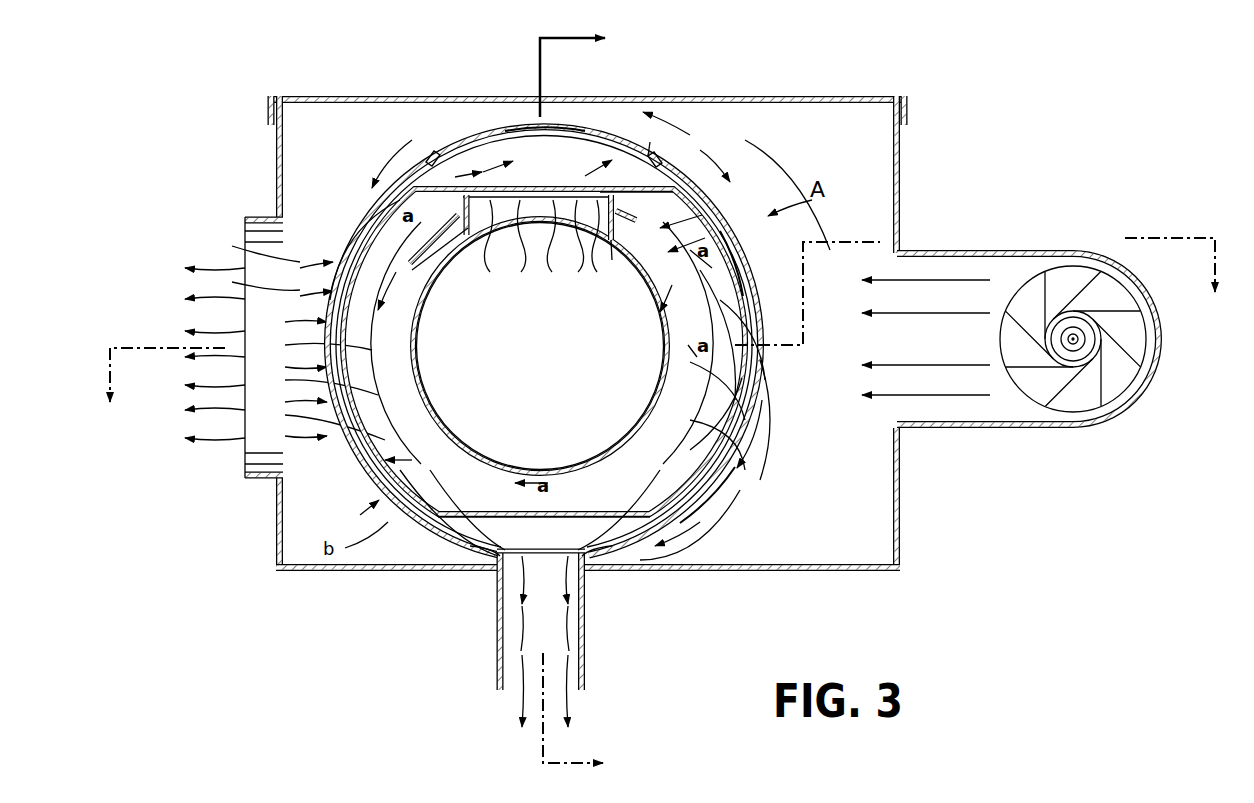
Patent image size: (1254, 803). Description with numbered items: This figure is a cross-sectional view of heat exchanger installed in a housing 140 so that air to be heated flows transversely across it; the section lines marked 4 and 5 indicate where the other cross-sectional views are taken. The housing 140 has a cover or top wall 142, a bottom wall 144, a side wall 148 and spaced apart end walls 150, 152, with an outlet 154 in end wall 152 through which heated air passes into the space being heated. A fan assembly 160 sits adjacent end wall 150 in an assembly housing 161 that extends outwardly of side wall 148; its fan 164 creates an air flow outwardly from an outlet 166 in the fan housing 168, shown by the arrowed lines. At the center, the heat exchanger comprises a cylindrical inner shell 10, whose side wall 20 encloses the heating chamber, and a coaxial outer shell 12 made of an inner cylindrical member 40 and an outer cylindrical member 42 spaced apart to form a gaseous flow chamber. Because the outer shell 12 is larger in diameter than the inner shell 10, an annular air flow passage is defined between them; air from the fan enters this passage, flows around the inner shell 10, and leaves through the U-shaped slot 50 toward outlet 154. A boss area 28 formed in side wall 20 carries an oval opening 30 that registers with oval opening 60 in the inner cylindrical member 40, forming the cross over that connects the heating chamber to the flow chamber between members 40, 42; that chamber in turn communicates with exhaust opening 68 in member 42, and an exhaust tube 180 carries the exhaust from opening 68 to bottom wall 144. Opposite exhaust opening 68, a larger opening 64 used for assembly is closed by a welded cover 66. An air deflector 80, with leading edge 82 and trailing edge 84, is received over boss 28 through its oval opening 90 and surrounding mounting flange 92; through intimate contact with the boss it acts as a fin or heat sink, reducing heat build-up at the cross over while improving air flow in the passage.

The inner shell 10 is at (540, 346).
The outer shell 12 is at (378, 503).
The side wall 20 is at (666, 336).
The boss area 28 is at (493, 250).
The oval opening 30 is at (550, 245).
The inner cylindrical member 40 is at (575, 508).
The outer cylindrical member 42 is at (683, 498).
The U-shaped slot area 50 is at (550, 348).
The oval opening 60 is at (541, 306).
The opening 64 is at (437, 158).
The cover 66 is at (585, 122).
The exhaust opening 68 is at (500, 596).
The air deflector 80 is at (433, 262).
The leading edge 82 is at (622, 224).
The trailing edge 84 is at (428, 276).
The oval opening 90 is at (482, 172).
The mounting flange 92 is at (690, 192).
The housing 140 is at (562, 320).
The top wall 142 is at (730, 99).
The bottom wall 144 is at (790, 572).
The side wall 148 is at (735, 271).
The end wall 150 is at (901, 196).
The end wall 152 is at (272, 150).
The outlet 154 is at (266, 258).
The fan assembly 160 is at (1029, 328).
The assembly housing 161 is at (1168, 360).
The fan 164 is at (1105, 392).
The outlet 166 is at (897, 338).
The fan housing 168 is at (985, 429).
The exhaust tube 180 is at (555, 636).
The section line 4- 4 is at (661, 342).
The section line 5- 5 is at (595, 403).